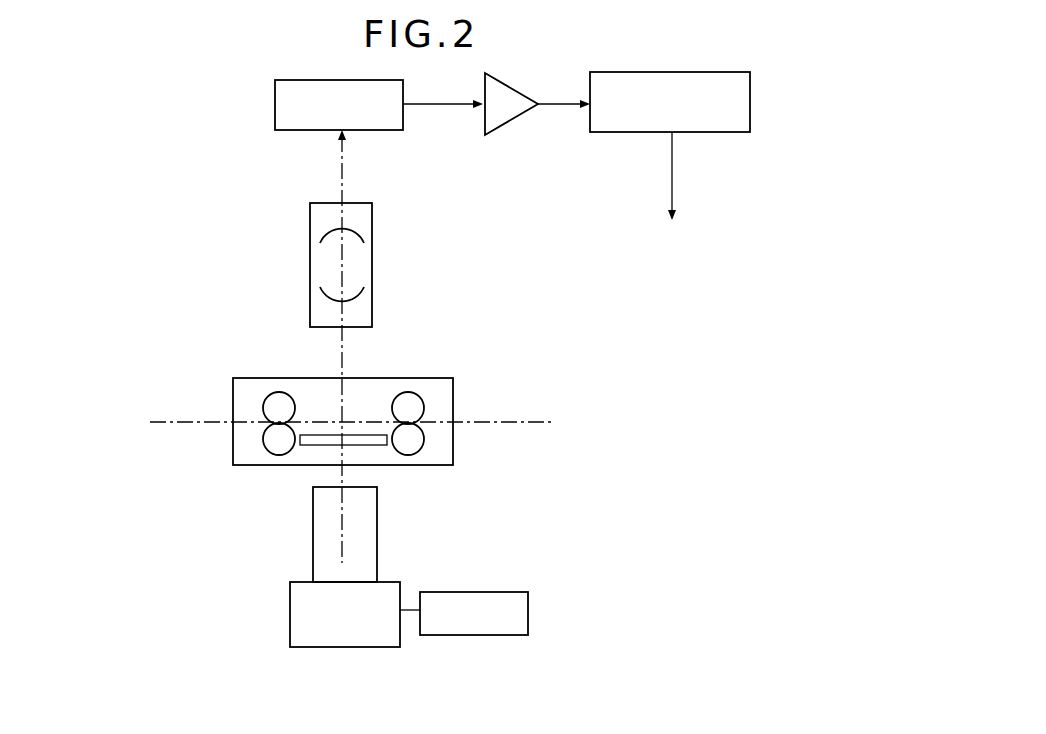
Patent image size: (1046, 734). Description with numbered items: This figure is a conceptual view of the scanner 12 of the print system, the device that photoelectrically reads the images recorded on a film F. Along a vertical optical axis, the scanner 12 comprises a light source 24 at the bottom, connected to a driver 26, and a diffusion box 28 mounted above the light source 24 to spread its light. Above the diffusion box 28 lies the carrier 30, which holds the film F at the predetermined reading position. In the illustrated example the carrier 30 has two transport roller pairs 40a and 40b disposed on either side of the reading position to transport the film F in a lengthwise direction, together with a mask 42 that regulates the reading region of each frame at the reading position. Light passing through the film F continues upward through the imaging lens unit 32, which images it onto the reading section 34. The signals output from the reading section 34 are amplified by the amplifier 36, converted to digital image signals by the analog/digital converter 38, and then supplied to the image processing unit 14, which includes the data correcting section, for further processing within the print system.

The scanner 12 is at (196, 606).
The image processing unit 14 is at (686, 241).
The light source 24 is at (353, 647).
The driver 26 is at (528, 610).
The diffusion box 28 is at (377, 550).
The carrier 30 is at (453, 382).
The imaging lens unit 32 is at (372, 275).
The reading section 34 is at (378, 130).
The amplifier 36 is at (505, 118).
The analog/digital (A/D) converter 38 is at (750, 100).
The transport roller pair 40a is at (273, 442).
The transport roller pair 40b is at (417, 438).
The mask 42 is at (313, 440).
The film F is at (533, 421).